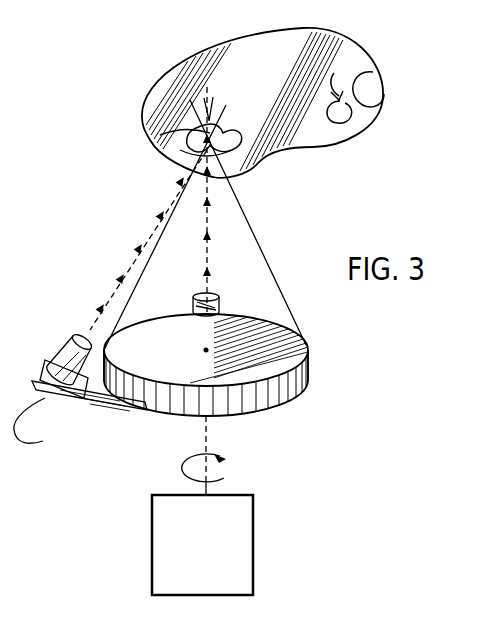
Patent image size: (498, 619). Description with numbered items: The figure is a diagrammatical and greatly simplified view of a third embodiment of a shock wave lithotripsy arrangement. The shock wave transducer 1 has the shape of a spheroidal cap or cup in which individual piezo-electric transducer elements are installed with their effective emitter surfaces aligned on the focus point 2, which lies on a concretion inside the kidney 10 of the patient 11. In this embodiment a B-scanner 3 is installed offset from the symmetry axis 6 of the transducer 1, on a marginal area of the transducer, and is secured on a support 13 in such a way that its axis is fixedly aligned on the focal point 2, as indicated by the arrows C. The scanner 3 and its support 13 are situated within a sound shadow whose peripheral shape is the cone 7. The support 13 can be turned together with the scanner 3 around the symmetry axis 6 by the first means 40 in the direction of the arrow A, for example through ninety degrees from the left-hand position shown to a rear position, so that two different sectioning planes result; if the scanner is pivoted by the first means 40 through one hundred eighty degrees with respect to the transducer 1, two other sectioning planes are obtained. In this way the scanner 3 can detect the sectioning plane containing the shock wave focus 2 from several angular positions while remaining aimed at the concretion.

The shock wave transducer 1 is at (302, 337).
The focus point 2 is at (170, 134).
The B-scanner 3 is at (212, 298).
The symmetry axis 6 is at (210, 427).
The cone 7 is at (252, 210).
The kidney 10 is at (244, 170).
The patient 11 is at (356, 44).
The support 13 is at (88, 406).
The first means 40 is at (202, 545).
The arrow A is at (230, 462).
The arrows C is at (155, 226).